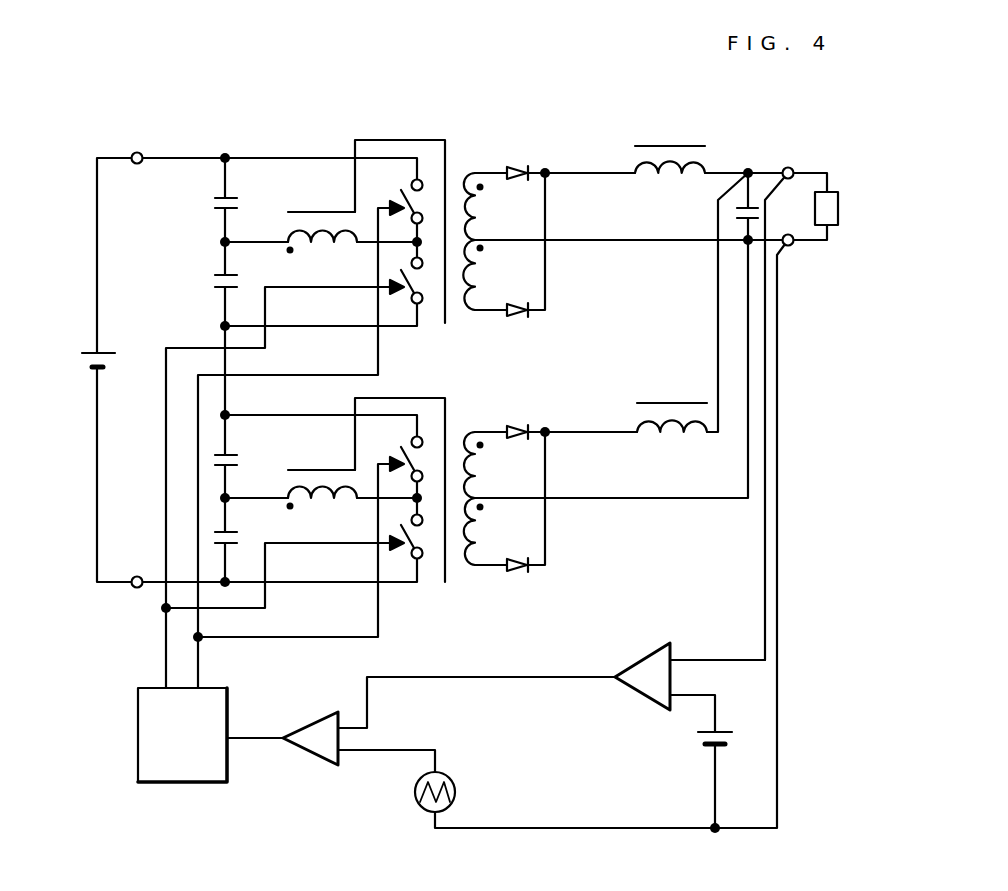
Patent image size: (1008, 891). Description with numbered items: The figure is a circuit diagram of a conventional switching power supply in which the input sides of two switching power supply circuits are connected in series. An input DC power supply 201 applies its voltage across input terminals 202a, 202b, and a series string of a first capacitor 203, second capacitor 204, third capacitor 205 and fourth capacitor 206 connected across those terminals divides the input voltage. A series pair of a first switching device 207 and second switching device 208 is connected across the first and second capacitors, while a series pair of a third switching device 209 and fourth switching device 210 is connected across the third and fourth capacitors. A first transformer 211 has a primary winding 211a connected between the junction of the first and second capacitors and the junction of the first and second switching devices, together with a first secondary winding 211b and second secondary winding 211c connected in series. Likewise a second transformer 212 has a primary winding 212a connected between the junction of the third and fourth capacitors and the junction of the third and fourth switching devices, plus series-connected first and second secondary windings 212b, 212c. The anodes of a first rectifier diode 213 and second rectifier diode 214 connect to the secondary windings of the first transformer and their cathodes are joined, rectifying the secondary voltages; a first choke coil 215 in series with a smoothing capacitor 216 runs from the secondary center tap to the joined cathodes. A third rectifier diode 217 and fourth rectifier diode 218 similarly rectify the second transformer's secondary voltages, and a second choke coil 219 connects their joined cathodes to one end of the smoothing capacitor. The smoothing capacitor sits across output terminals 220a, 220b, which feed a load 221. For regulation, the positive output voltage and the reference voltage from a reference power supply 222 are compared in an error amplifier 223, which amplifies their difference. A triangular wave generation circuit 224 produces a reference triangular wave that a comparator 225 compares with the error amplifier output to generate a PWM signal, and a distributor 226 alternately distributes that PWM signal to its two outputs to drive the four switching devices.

The input DC power supply 201 is at (82, 353).
The input terminal 202a is at (132, 156).
The input terminal 202b is at (132, 585).
The first capacitor 203 is at (220, 197).
The second capacitor 204 is at (220, 275).
The third capacitor 205 is at (220, 455).
The fourth capacitor 206 is at (220, 532).
The first switching device 207 is at (414, 200).
The second switching device 208 is at (407, 275).
The third switching device 209 is at (414, 456).
The fourth switching device 210 is at (407, 530).
The first transformer 211 is at (395, 261).
The primary winding 211a is at (304, 248).
The first secondary winding 211b is at (480, 222).
The second secondary winding 211c is at (478, 295).
The second transformer 212 is at (397, 520).
The primary winding 212a is at (304, 505).
The first secondary winding 212b is at (480, 482).
The second secondary winding 212c is at (478, 555).
The first rectifier diode 213 is at (515, 170).
The second rectifier diode 214 is at (518, 306).
The first choke coil 215 is at (668, 146).
The smoothing capacitor 216 is at (740, 207).
The third rectifier diode 217 is at (515, 430).
The fourth rectifier diode 218 is at (518, 562).
The second choke coil 219 is at (668, 403).
The output terminal 220a is at (812, 152).
The output terminal 220b is at (790, 246).
The load 221 is at (830, 226).
The reference power supply 222 is at (710, 745).
The error amplifier 223 is at (642, 648).
The triangular wave generation circuit 224 is at (446, 778).
The comparator 225 is at (318, 718).
The distributor 226 is at (230, 780).